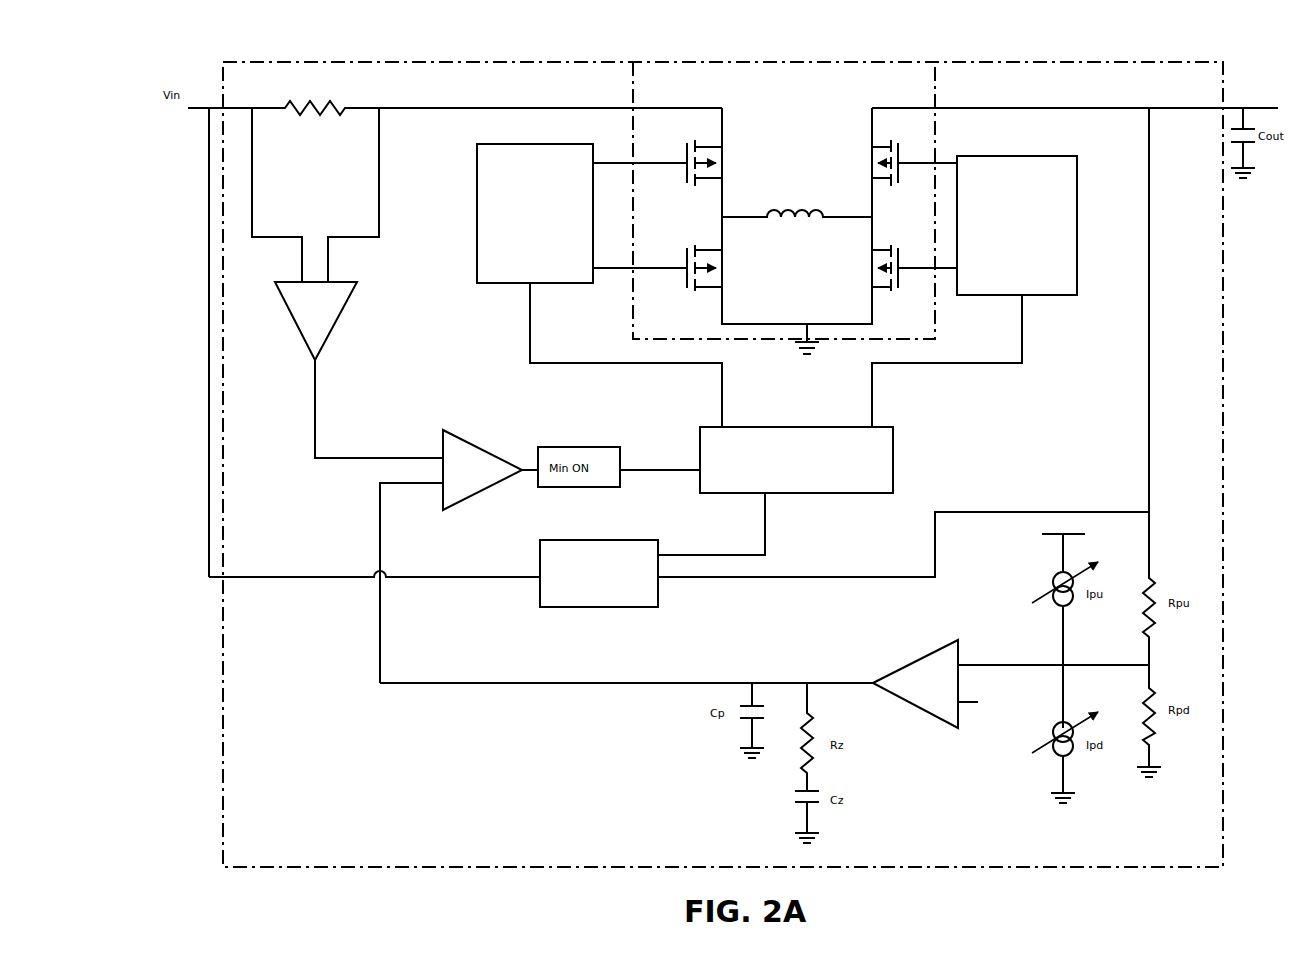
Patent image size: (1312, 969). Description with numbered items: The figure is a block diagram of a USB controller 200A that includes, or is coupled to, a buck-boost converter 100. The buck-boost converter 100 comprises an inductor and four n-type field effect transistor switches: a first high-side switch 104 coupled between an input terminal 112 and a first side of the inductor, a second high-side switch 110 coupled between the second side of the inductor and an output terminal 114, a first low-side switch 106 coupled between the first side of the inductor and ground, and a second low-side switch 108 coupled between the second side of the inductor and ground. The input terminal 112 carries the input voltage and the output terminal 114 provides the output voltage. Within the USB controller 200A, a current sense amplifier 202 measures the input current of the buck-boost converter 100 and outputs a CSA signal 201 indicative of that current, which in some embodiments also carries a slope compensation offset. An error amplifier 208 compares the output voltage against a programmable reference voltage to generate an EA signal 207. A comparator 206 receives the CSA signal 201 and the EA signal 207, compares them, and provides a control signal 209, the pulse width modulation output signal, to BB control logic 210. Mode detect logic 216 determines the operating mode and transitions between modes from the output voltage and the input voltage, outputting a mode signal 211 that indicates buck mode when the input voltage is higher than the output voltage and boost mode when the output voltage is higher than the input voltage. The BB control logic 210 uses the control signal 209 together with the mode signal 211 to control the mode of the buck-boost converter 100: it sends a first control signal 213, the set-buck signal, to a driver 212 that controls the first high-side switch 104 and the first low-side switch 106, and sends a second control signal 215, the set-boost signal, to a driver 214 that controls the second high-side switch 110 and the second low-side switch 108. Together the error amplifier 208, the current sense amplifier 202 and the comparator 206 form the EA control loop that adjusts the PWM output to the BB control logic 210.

The USB controller 200A is at (211, 70).
The buck-boost converter 100 is at (836, 161).
The first high-side switch 104 is at (688, 160).
The first low-side switch 106 is at (705, 268).
The second low-side switch 108 is at (882, 268).
The second high-side switch 110 is at (898, 160).
The input terminal 112 is at (690, 108).
The output terminal 114 is at (897, 108).
The CSA signal 201 is at (315, 388).
The current sense amplifier 202 is at (283, 297).
The comparator 206 is at (500, 462).
The EA signal 207 is at (577, 683).
The error amplifier 208 is at (946, 742).
The control signal 209 is at (632, 470).
The BB control logic 210 is at (796, 460).
The mode signal 211 is at (698, 556).
The driver 212 is at (535, 213).
The first control signal 213 is at (535, 363).
The driver 214 is at (1017, 225).
The second control signal 215 is at (980, 365).
The mode detect logic 216 is at (558, 542).